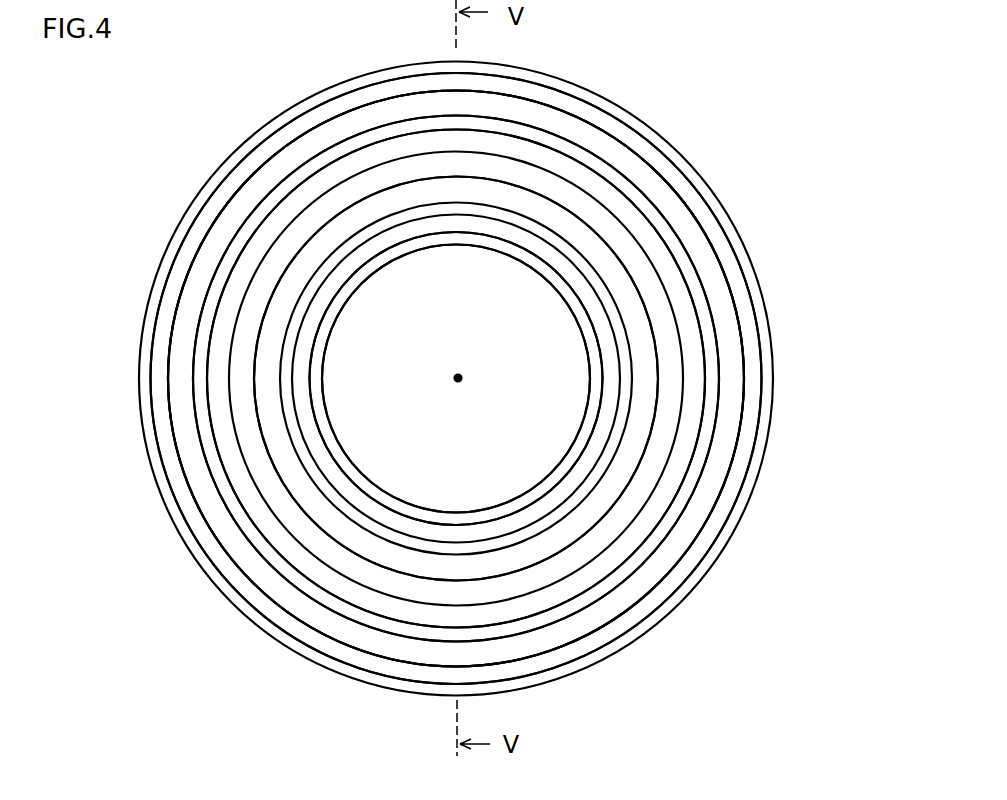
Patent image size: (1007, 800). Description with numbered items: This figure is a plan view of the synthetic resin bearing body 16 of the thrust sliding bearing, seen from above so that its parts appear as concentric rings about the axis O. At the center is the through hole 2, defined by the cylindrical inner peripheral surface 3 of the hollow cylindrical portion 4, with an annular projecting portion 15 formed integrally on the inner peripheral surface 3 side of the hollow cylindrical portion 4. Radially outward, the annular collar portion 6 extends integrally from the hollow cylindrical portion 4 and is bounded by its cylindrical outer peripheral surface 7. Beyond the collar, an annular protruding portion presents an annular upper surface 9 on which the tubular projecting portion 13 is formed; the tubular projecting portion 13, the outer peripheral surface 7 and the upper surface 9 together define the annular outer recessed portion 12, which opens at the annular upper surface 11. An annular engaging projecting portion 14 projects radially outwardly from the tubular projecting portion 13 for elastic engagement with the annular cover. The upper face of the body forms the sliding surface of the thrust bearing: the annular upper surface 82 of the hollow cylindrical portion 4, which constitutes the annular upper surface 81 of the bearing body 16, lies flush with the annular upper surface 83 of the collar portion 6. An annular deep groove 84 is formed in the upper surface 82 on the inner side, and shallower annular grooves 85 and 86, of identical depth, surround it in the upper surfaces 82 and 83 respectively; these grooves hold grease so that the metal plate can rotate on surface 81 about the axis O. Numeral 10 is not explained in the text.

The through hole 2 is at (454, 483).
The cylindrical inner peripheral surface 3 is at (388, 263).
The hollow cylindrical portion 4 is at (620, 295).
The annular collar portion 6 is at (265, 227).
The cylindrical outer peripheral surface 7 is at (700, 267).
The annular upper surface 9 is at (610, 153).
The zone 10 is at (676, 189).
The annular upper surface 11 is at (287, 137).
The annular outer recessed portion 12 is at (682, 540).
The tubular projecting portion 13 is at (218, 550).
The annular engaging projecting portion 14 is at (297, 647).
The annular projecting portion 15 is at (327, 323).
The bearing body 16 is at (796, 377).
The annular upper surface 81 is at (253, 448).
The annular upper surface 82 is at (567, 507).
The annular upper surface 83 is at (705, 453).
The annular deep groove 84 is at (530, 242).
The annular shallow groove 85 is at (263, 353).
The annular shallow groove 86 is at (288, 540).
The axis O is at (456, 382).